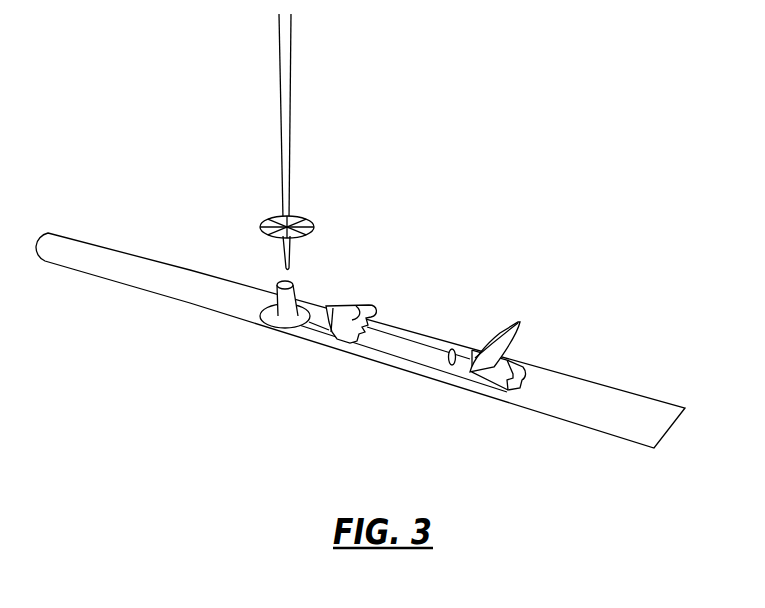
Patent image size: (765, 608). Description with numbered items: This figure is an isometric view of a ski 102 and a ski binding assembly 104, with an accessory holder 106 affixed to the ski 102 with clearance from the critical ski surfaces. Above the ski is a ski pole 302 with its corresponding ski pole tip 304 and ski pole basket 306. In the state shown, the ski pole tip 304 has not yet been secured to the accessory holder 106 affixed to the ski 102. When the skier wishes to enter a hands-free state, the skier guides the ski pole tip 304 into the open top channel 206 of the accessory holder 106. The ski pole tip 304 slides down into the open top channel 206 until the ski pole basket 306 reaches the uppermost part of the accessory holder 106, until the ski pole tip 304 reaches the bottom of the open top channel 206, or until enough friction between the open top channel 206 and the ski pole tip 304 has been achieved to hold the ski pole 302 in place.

The ski 102 is at (600, 392).
The ski binding assembly 104 is at (519, 324).
The accessory holder 106 is at (275, 321).
The open top channel 206 is at (280, 283).
The ski pole 302 is at (288, 149).
The ski pole tip 304 is at (296, 262).
The ski pole basket 306 is at (313, 224).